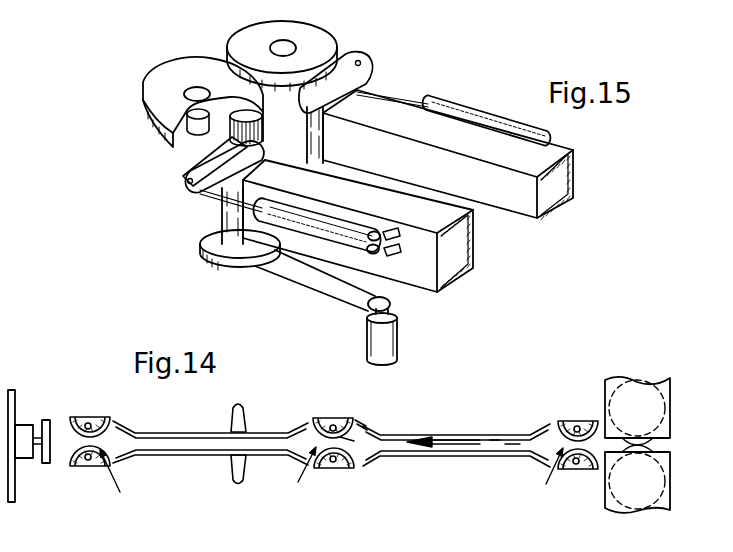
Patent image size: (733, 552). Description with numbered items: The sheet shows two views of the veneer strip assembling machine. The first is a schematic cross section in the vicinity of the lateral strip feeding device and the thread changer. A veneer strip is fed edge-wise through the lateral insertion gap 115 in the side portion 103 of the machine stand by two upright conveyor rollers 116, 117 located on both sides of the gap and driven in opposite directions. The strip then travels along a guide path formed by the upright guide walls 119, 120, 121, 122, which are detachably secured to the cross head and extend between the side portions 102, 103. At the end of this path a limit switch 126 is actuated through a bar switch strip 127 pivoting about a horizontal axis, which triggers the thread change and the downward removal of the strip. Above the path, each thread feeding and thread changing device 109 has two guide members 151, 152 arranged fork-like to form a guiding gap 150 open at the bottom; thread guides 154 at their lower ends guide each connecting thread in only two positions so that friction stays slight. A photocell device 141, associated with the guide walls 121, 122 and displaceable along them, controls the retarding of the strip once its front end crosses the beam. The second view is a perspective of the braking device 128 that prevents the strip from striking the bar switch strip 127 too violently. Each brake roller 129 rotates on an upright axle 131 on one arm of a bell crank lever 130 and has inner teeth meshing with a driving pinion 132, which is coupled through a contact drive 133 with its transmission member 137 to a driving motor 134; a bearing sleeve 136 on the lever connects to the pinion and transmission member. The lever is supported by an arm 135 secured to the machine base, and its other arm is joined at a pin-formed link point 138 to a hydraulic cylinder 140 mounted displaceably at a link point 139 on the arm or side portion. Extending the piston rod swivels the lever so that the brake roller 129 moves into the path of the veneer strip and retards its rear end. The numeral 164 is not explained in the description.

In FIG. 14, the side portion 102 is at (20, 392).
In FIG. 14, the side portion 103 is at (659, 503).
In FIG. 14, the thread feeding and thread changing device 109 is at (333, 475).
In FIG. 14, the lateral insertion gap 115 is at (607, 443).
In FIG. 14, the conveyor roller 116 is at (630, 500).
In FIG. 14, the conveyor roller 117 is at (620, 393).
In FIG. 14, the guide wall 119 is at (392, 457).
In FIG. 14, the guide wall 120 is at (401, 433).
In FIG. 14, the guide wall 121 is at (168, 459).
In FIG. 14, the guide wall 122 is at (168, 431).
In FIG. 14, the limit switch 126 is at (27, 458).
In FIG. 14, the bar switch strip 127 is at (48, 421).
In FIG. 15, the braking device 128 is at (214, 57).
In FIG. 15, the brake roller 129 is at (155, 83).
In FIG. 15, the bell crank lever 130 is at (205, 195).
In FIG. 15, the upright axle 131 is at (188, 143).
In FIG. 15, the driving pinion 132 is at (230, 134).
In FIG. 15, the contact drive 133 is at (297, 291).
In FIG. 15, the driving motor 134 is at (366, 337).
In FIG. 15, the arm 135 is at (468, 240).
In FIG. 15, the bearing sleeve 136 is at (230, 252).
In FIG. 15, the transmission member 137 is at (212, 238).
In FIG. 15, the link point 138 is at (186, 183).
In FIG. 15, the link point 139 is at (388, 262).
In FIG. 15, the hydraulic cylinder 140 is at (312, 222).
In FIG. 14, the photocell device 141 is at (237, 456).
In FIG. 14, the guiding gap 150 is at (362, 423).
In FIG. 14, the guide member 151 is at (332, 418).
In FIG. 14, the guide member 152 is at (331, 468).
In FIG. 14, the thread guide 154 is at (93, 423).
In FIG. 14, the element 164 is at (452, 548).